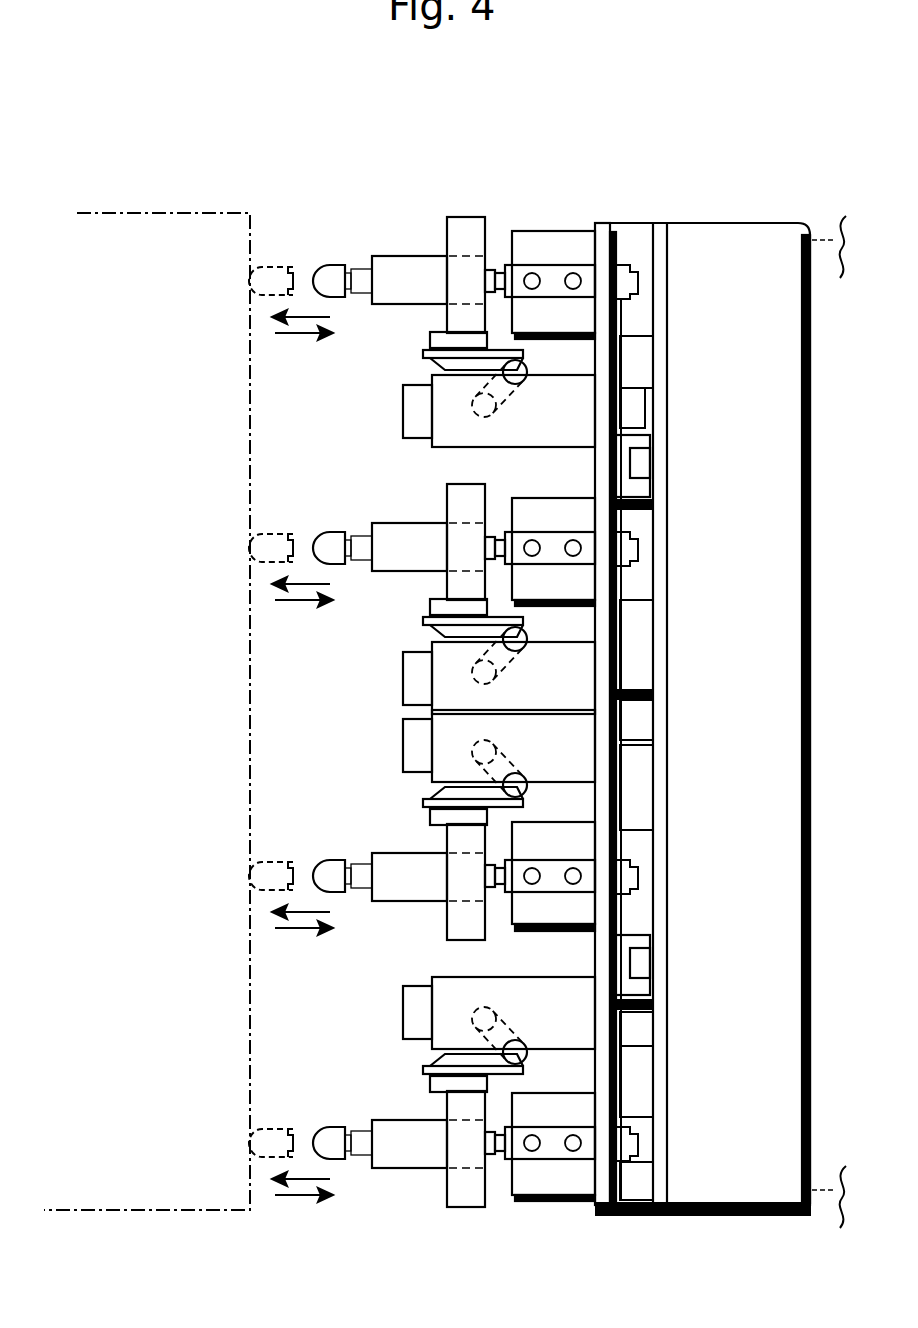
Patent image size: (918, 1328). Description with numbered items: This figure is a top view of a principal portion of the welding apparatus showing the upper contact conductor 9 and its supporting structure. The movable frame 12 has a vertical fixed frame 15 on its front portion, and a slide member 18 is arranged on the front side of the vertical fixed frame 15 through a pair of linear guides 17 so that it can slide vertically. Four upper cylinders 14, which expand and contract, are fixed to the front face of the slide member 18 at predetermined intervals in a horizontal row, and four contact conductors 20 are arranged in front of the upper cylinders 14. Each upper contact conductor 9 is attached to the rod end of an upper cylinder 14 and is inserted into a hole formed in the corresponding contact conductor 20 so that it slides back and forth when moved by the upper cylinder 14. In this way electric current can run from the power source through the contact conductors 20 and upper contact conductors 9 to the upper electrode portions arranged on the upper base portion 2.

The upper base portion 2 is at (198, 206).
The upper contact conductor 9 is at (330, 265).
The movable frame 12 is at (727, 212).
The upper cylinder 14 is at (530, 237).
The vertical fixed frame 15 is at (660, 228).
The linear guide 17 is at (615, 462).
The slide member 18 is at (600, 222).
The contact conductor 20 is at (463, 235).